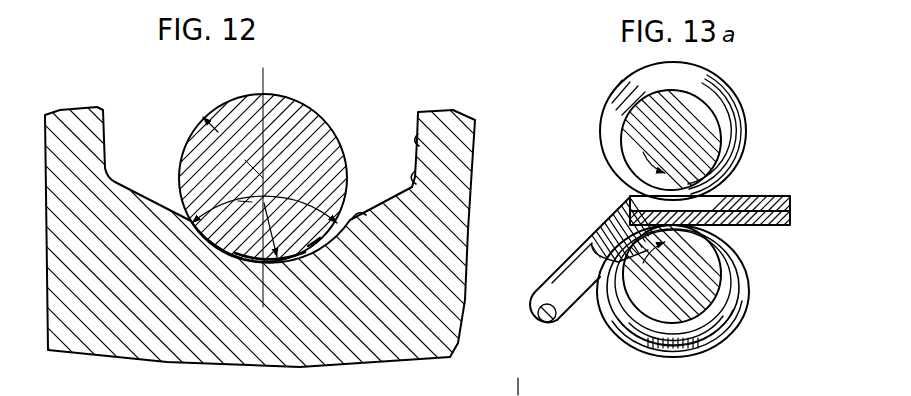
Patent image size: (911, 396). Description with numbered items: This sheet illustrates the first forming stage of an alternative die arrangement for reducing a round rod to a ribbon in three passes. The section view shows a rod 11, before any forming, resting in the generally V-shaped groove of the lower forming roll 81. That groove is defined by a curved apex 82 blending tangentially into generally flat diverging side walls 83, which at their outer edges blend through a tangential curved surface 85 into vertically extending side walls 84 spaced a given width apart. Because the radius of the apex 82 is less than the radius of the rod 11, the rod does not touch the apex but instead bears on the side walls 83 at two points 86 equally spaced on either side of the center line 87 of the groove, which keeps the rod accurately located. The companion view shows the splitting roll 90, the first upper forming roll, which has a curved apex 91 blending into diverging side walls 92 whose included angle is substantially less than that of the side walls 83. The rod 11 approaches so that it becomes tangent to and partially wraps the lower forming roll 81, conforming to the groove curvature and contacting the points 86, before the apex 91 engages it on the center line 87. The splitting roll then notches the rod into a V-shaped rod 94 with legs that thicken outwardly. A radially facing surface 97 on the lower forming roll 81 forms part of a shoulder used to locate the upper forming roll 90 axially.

In FIG. 12, the rod 11 is at (312, 130).
In FIG. 13a, the rod 11 is at (580, 297).
In FIG. 12, the lower forming roll 81 is at (463, 128).
In FIG. 13a, the lower forming roll 81 is at (722, 295).
In FIG. 12, the curved apex 82 is at (273, 263).
In FIG. 12, the diverging side walls 83 is at (365, 217).
In FIG. 12, the vertically extending side walls 84 is at (417, 140).
In FIG. 12, the tangential curved surface 85 is at (413, 177).
In FIG. 12, the contact points 86 is at (313, 241).
In FIG. 12, the center line 87 is at (263, 78).
In FIG. 13a, the center line 87 is at (537, 395).
In FIG. 13a, the upper forming roll 90 is at (702, 97).
In FIG. 13a, the curved apex 91 is at (602, 157).
In FIG. 13a, the diverging side walls 92 is at (735, 108).
In FIG. 13a, the V-shaped rod 94 is at (773, 197).
In FIG. 13a, the radially facing surface 97 is at (717, 340).